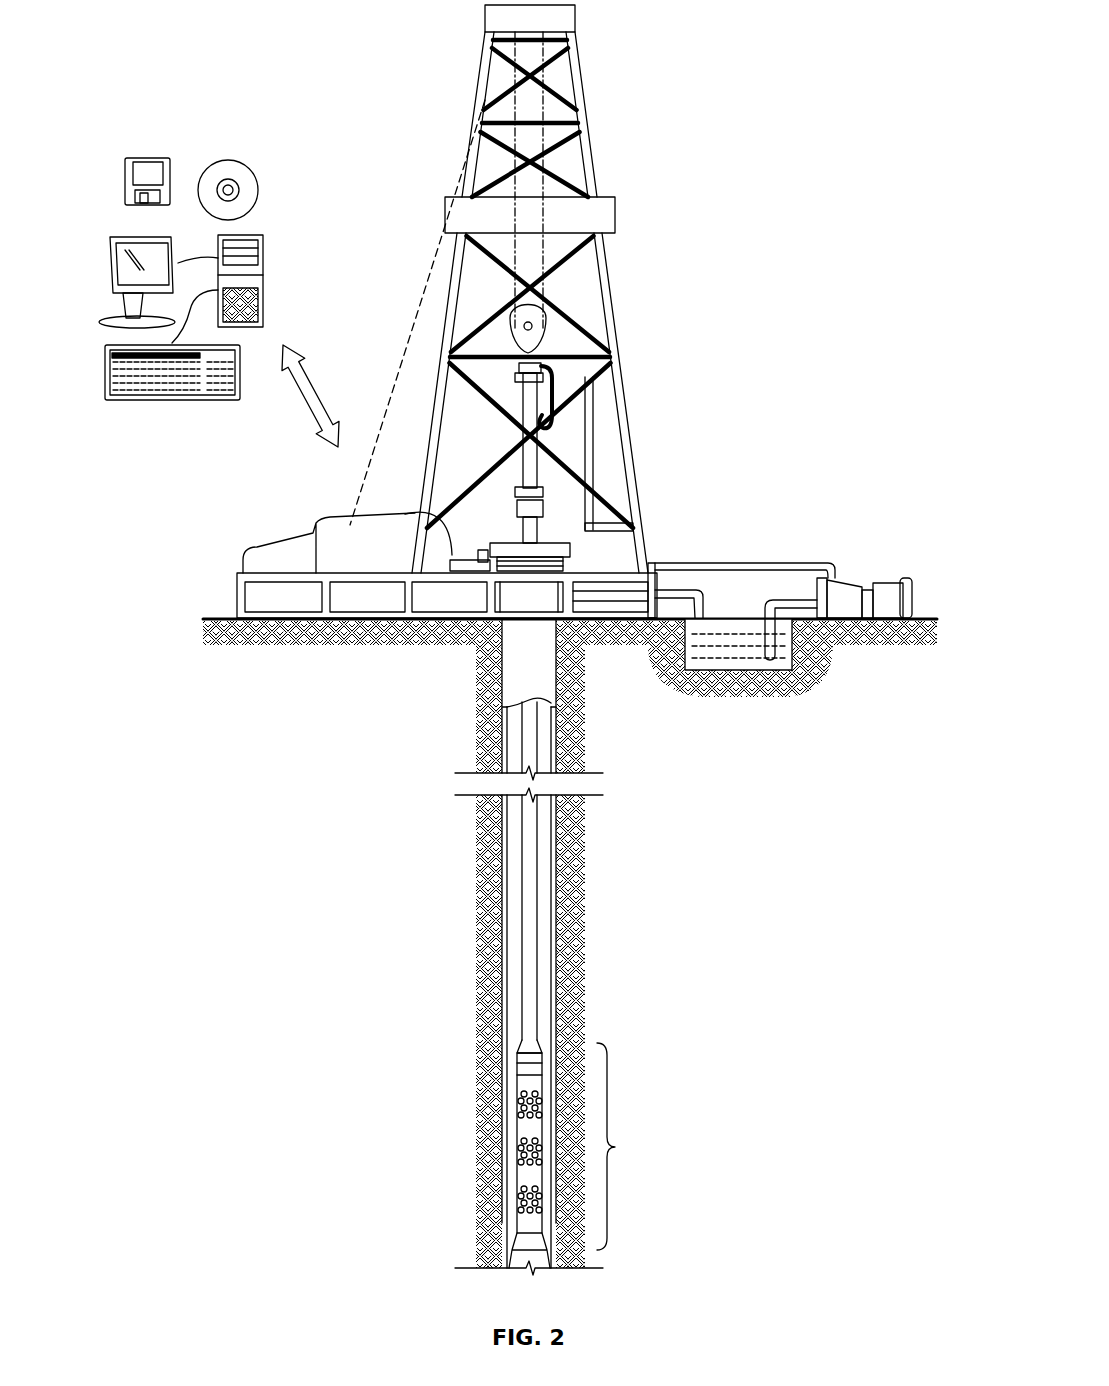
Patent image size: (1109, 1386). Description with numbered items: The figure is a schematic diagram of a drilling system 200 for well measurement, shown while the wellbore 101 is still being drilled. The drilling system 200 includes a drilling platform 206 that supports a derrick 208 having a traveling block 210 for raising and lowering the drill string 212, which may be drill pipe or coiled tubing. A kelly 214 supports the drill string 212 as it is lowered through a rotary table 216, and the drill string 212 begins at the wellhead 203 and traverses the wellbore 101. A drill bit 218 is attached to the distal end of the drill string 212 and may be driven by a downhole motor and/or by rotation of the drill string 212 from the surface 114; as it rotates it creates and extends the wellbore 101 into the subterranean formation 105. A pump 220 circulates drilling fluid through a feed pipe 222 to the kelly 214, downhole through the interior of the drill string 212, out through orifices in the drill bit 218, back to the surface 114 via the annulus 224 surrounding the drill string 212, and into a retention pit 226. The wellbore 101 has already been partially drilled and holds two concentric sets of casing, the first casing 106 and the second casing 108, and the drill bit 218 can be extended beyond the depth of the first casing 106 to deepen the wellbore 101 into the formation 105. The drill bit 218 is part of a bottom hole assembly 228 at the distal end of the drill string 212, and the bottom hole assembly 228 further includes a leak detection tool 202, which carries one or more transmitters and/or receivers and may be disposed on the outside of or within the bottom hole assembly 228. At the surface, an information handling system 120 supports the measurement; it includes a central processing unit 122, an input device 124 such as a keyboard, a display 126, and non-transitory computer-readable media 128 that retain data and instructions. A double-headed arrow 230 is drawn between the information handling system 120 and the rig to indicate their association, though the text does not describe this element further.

The drilling system 200 is at (792, 97).
The information handling system 120 is at (300, 170).
The central processing unit 122 is at (263, 257).
The input device 124 is at (168, 403).
The display 126 is at (108, 243).
The non-transitory computer-readable media 128 is at (203, 160).
The communication link 230 is at (308, 377).
The derrick 208 is at (582, 120).
The traveling block 210 is at (550, 332).
The kelly 214 is at (538, 403).
The rotary table 216 is at (557, 533).
The wellhead 203 is at (578, 562).
The drilling platform 206 is at (237, 597).
The feed pipe 222 is at (757, 562).
The pump 220 is at (836, 578).
The surface 114 is at (922, 617).
The retention pit 226 is at (742, 672).
The first casing 106 is at (505, 837).
The second casing 108 is at (562, 737).
The wellbore 101 is at (560, 820).
The subterranean formation 105 is at (809, 845).
The drill string 212 is at (523, 938).
The annulus 224 is at (542, 907).
The leak detection tool 202 is at (515, 1137).
The drill bit 218 is at (515, 1238).
The bottom hole assembly 228 is at (629, 1146).